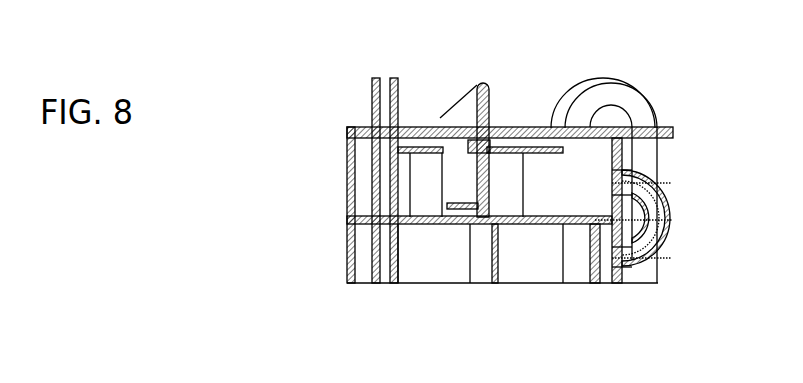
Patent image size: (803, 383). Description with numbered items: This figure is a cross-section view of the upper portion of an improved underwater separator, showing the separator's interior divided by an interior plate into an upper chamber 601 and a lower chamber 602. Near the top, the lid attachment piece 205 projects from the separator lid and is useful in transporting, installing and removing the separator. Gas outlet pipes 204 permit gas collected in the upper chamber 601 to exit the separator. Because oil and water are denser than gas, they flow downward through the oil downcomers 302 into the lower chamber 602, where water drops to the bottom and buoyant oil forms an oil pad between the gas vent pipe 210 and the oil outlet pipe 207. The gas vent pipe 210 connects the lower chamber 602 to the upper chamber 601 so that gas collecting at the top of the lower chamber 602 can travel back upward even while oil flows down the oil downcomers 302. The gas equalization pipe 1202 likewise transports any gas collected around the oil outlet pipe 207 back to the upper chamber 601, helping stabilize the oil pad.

The gas outlet pipe 204 is at (632, 97).
The lid attachment piece 205 is at (490, 85).
The oil outlet pipe 207 is at (385, 85).
The gas vent pipe 210 is at (635, 257).
The oil downcomer 302 is at (485, 268).
The upper chamber 601 is at (560, 187).
The lower chamber 602 is at (430, 258).
The gas equalization pipe 1202 is at (400, 284).